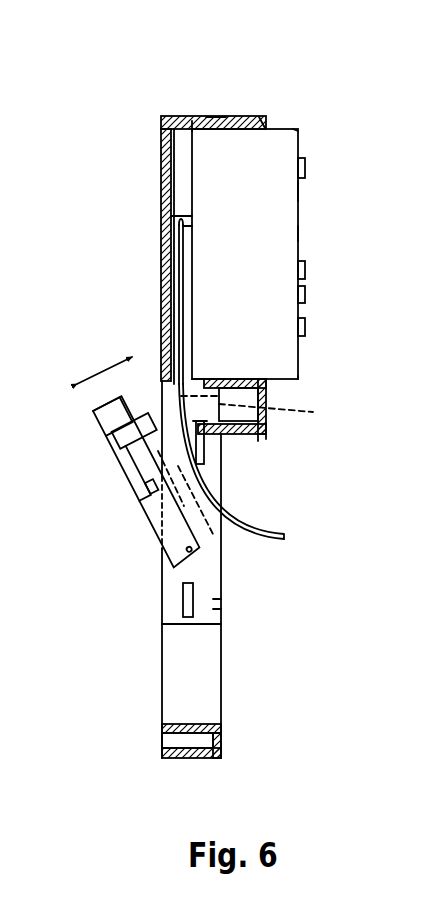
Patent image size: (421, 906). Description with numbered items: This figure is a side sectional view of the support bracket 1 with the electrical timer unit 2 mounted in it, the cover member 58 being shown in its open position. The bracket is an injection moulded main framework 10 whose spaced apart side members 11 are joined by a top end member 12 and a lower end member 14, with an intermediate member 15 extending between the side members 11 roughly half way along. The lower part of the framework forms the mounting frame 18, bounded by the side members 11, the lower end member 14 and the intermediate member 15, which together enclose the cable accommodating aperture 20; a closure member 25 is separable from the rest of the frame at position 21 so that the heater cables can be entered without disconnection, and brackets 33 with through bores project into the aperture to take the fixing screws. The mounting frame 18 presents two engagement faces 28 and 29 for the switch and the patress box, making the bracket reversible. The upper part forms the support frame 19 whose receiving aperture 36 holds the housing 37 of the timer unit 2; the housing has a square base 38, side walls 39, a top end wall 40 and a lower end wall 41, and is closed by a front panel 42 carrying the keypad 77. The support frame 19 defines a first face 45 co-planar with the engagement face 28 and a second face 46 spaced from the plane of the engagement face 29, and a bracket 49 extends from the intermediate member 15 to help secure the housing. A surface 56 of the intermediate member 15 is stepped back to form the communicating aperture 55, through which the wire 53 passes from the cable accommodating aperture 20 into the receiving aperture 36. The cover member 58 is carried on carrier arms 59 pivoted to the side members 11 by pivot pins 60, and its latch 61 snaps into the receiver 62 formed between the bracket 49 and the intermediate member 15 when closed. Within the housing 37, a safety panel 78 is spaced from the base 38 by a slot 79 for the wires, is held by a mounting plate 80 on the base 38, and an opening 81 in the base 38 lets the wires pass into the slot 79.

The support bracket 1 is at (134, 98).
The electrical timer unit 2 is at (285, 158).
The main framework 10 is at (247, 115).
The side members 11 is at (222, 570).
The top end member 12 is at (262, 118).
The lower end member 14 is at (188, 760).
The intermediate member 15 is at (270, 420).
The mounting frame 18 is at (222, 608).
The support frame 19 is at (220, 115).
The cable accommodating aperture 20 is at (222, 598).
The separation position 21 is at (200, 627).
The closure member 25 is at (173, 703).
The engagement face 28 is at (173, 647).
The engagement face 29 is at (222, 668).
The brackets 33 is at (206, 447).
The receiving aperture 36 is at (190, 130).
The housing 37 is at (298, 198).
The base 38 is at (177, 328).
The side walls 39 is at (285, 252).
The top end wall 40 is at (297, 122).
The lower end wall 41 is at (290, 379).
The front panel 42 is at (298, 236).
The first face 45 is at (160, 128).
The second face 46 is at (265, 114).
The bracket 49 is at (236, 378).
The wire 53 is at (276, 534).
The communicating aperture 55 is at (196, 378).
The surface 56 is at (252, 418).
The cover member 58 is at (244, 549).
The carrier arms 59 is at (148, 526).
The pivot pins 60 is at (166, 560).
The latch 61 is at (132, 425).
The receiver 62 is at (258, 440).
The keypad 77 is at (328, 305).
The safety panel 78 is at (180, 188).
The slot 79 is at (180, 297).
The mounting plate 80 is at (178, 213).
The opening 81 is at (183, 236).